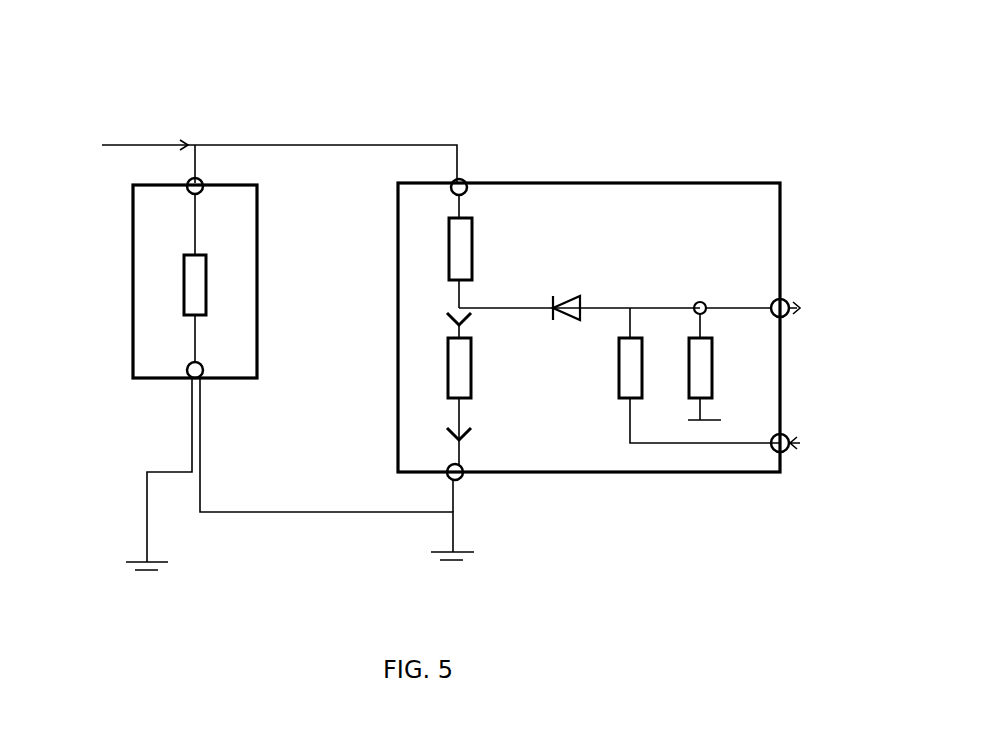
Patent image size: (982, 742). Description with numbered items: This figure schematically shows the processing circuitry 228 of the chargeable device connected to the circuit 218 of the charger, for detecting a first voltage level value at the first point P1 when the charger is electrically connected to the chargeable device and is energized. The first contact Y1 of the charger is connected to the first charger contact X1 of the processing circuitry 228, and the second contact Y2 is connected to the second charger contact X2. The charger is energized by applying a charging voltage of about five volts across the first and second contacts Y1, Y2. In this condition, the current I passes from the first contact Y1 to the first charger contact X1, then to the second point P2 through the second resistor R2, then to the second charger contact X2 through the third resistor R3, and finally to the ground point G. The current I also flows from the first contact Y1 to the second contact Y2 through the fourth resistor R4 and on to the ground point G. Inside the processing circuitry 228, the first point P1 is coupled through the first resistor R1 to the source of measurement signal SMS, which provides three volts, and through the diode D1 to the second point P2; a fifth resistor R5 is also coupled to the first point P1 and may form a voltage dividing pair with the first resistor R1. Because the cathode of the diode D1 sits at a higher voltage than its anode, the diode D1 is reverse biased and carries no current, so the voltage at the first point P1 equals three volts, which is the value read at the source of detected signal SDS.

The circuit 218 is at (155, 281).
The processing circuitry 228 is at (565, 200).
The first contact Y1 is at (196, 184).
The second contact Y2 is at (198, 376).
The first charger contact X1 is at (461, 184).
The second charger contact X2 is at (460, 478).
The current I is at (330, 162).
The first resistor R1 is at (680, 375).
The second resistor R2 is at (483, 251).
The third resistor R3 is at (482, 395).
The fourth resistor R4 is at (215, 277).
The fifth resistor R5 is at (721, 367).
The diode D1 is at (571, 288).
The first point P1 is at (700, 306).
The second point P2 is at (459, 309).
The source of detected signal SDS is at (816, 312).
The source of measurement signal SMS is at (817, 447).
The ground point G is at (147, 572).